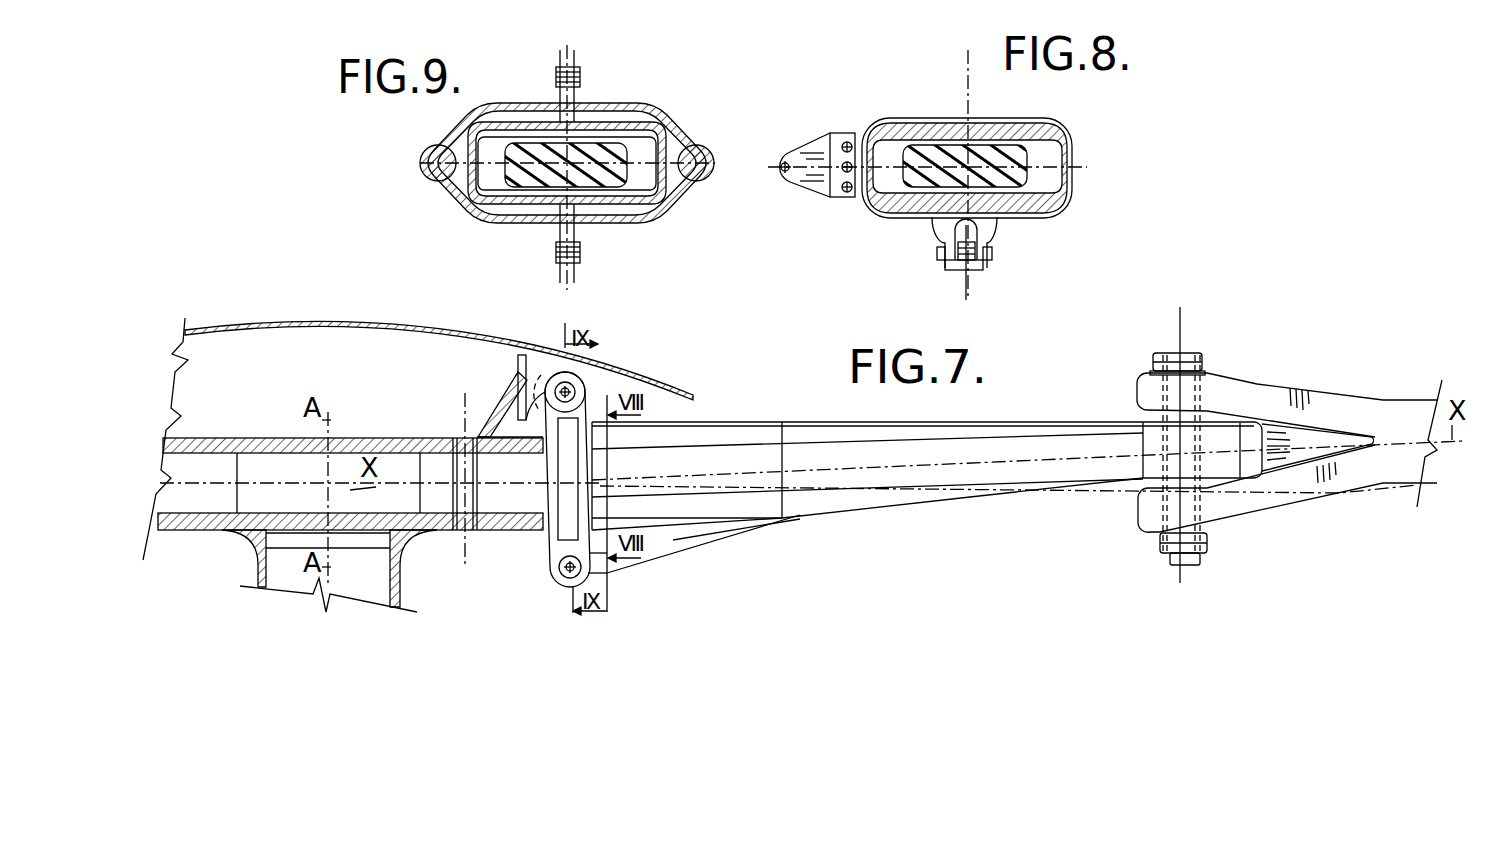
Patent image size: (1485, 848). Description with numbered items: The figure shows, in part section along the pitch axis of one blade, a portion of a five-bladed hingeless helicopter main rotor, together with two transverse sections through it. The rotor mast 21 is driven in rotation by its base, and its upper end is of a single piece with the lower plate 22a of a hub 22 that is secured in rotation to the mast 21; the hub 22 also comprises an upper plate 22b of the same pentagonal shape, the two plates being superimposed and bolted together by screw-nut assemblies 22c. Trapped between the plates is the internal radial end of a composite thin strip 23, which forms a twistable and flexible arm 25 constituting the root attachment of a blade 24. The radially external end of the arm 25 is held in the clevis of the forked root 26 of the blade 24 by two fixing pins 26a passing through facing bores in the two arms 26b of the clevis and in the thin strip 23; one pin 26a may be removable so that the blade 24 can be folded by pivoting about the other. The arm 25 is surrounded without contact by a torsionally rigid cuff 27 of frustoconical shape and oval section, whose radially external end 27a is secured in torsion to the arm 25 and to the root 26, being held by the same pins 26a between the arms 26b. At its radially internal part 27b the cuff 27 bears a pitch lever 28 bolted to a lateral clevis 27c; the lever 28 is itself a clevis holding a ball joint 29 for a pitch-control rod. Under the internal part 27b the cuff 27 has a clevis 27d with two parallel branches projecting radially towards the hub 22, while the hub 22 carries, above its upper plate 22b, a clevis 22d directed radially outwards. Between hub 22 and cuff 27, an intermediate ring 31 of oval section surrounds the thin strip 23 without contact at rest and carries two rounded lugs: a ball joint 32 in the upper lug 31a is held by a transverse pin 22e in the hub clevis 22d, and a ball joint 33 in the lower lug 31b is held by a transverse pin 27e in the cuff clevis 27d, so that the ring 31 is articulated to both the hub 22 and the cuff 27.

In FIG. 7, the rotor mast 21 is at (401, 586).
In FIG. 7, the hub 22 is at (398, 434).
In FIG. 7, the lower plate 22a is at (502, 522).
In FIG. 7, the upper plate 22b is at (260, 440).
In FIG. 7, the screw-nut assemblies 22c is at (457, 468).
In FIG. 7, the clevis 22d is at (518, 420).
In FIG. 7, the transverse pin 22e is at (560, 385).
In FIG. 9, the composite thin strip 23 is at (625, 143).
In FIG. 8, the composite thin strip 23 is at (993, 130).
In FIG. 7, the composite thin strip 23 is at (805, 475).
In FIG. 7, the blade 24 is at (1418, 405).
In FIG. 7, the twistable and flexible arm 25 is at (993, 440).
In FIG. 7, the forked blade root 26 is at (1328, 390).
In FIG. 7, the fixing pins 26a is at (1184, 357).
In FIG. 7, the arms of the blade root clevis 26b is at (1263, 400).
In FIG. 7, the cuff 27 is at (791, 421).
In FIG. 7, the radially external end of the cuff 27a is at (1137, 420).
In FIG. 8, the internal part of the cuff 27b is at (916, 120).
In FIG. 7, the internal part of the cuff 27b is at (724, 424).
In FIG. 8, the lateral clevis 27c is at (848, 140).
In FIG. 8, the clevis 27d is at (942, 263).
In FIG. 7, the clevis 27d is at (694, 547).
In FIG. 8, the transverse pin 27e is at (992, 253).
In FIG. 7, the transverse pin 27e is at (598, 577).
In FIG. 8, the pitch lever 28 is at (835, 145).
In FIG. 8, the ball joint 29 is at (784, 172).
In FIG. 9, the intermediate ring 31 is at (618, 105).
In FIG. 7, the intermediate ring 31 is at (573, 452).
In FIG. 9, the upper lug 31a is at (577, 62).
In FIG. 7, the upper lug 31a is at (590, 392).
In FIG. 9, the lower lug 31b is at (578, 268).
In FIG. 7, the lower lug 31b is at (561, 569).
In FIG. 9, the ball joint 32 is at (557, 74).
In FIG. 7, the ball joint 32 is at (575, 382).
In FIG. 9, the ball joint 33 is at (558, 256).
In FIG. 8, the ball joint 33 is at (966, 268).
In FIG. 7, the ball joint 33 is at (547, 533).